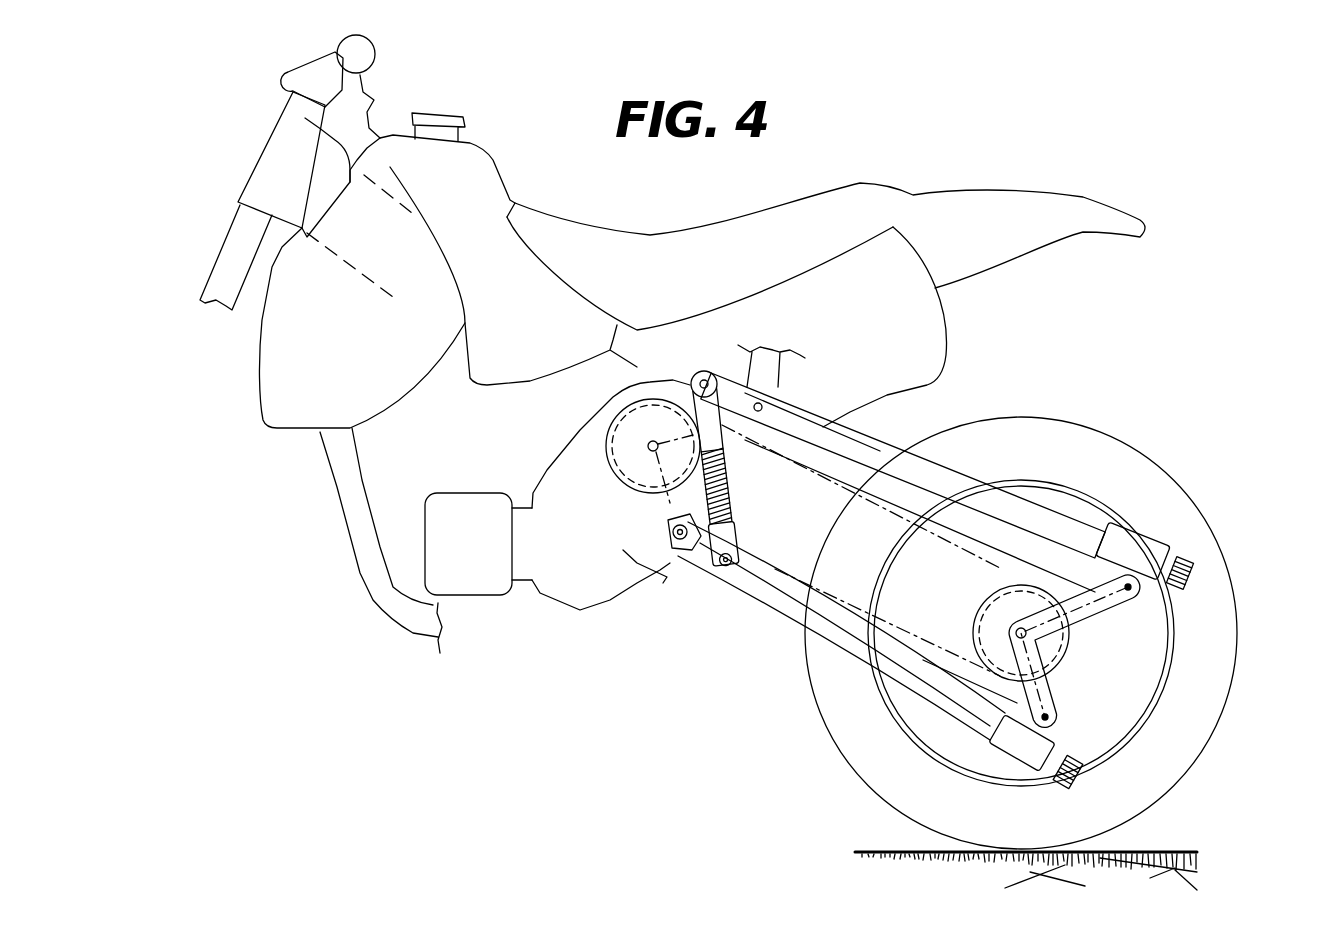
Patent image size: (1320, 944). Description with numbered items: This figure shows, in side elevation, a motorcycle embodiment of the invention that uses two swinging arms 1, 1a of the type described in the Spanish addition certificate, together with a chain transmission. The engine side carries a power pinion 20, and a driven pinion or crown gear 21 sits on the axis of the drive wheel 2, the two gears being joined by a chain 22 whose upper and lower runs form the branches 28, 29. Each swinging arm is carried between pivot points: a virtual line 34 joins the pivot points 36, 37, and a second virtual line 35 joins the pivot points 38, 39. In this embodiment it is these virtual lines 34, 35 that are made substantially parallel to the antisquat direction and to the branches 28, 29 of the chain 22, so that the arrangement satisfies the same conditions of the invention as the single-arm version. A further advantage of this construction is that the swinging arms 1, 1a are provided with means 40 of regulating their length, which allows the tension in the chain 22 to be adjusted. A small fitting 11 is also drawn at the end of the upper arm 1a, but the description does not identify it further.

The swinging arm 1 is at (922, 574).
The swinging arm 1a is at (983, 483).
The rear wheel 2 is at (1223, 643).
The adjusting nut 11 is at (1185, 556).
The power pinion 20 is at (630, 475).
The driven pinion or crown gear 21 is at (1053, 655).
The chain 22 is at (860, 471).
The branch of the chain 28 is at (803, 578).
The branch of the chain 29 is at (817, 475).
The virtual line 34 is at (913, 673).
The virtual line 35 is at (1030, 532).
The pivot point 36 is at (683, 520).
The pivot point 37 is at (1049, 716).
The pivot point 38 is at (762, 405).
The pivot point 39 is at (1140, 610).
The means of regulating the length of the swinging arms 40 is at (1070, 778).